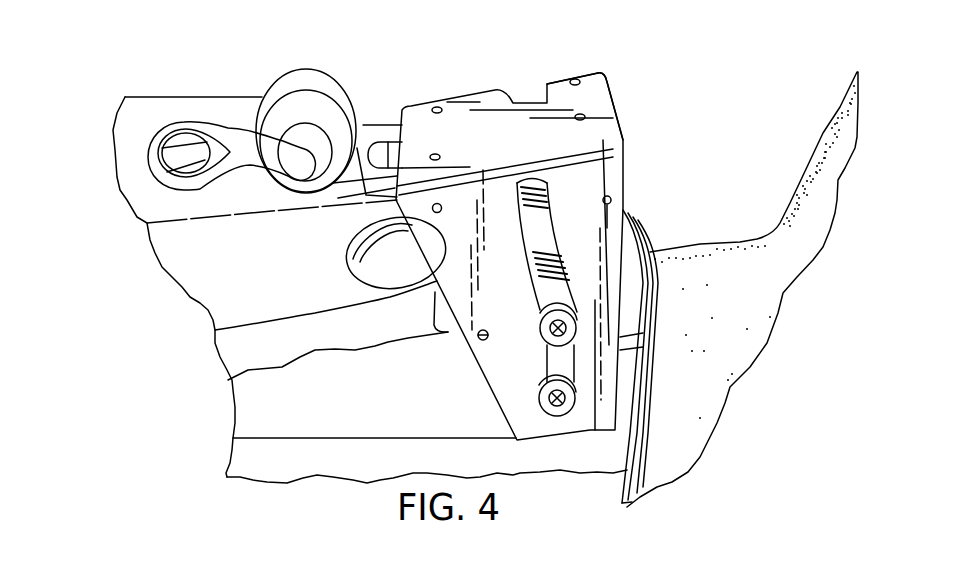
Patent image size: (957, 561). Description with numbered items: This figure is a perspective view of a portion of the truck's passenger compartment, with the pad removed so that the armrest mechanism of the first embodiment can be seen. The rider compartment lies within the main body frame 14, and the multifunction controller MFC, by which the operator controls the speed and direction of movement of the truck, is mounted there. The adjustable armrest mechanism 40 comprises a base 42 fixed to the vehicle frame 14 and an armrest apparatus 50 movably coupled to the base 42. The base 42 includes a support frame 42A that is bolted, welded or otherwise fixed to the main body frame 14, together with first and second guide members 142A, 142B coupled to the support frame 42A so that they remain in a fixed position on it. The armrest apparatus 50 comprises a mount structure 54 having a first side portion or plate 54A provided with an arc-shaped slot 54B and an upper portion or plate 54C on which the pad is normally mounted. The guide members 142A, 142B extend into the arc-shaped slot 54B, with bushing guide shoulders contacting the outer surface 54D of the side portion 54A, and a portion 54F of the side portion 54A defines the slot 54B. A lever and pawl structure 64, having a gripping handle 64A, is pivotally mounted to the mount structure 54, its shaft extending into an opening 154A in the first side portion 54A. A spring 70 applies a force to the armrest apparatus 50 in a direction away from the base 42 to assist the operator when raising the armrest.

The main body frame 14 is at (438, 414).
The multifunction controller MFC is at (306, 90).
The lever and pawl structure 64 is at (374, 155).
The gripping handle 64A is at (396, 150).
The mount structure 54 is at (617, 107).
The first side portion 54A is at (617, 170).
The arc-shaped slot 54B is at (555, 233).
The upper portion 54C is at (597, 102).
The outer surface 54D is at (437, 287).
The portion defining the slot 54F is at (512, 205).
The spring 70 is at (547, 270).
The first guide member 142A is at (571, 313).
The second guide member 142B is at (573, 381).
The opening 154A is at (432, 208).
The adjustable armrest mechanism 40 is at (581, 66).
The armrest apparatus 50 is at (613, 63).
The base 42 is at (607, 433).
The support frame 42A is at (620, 406).